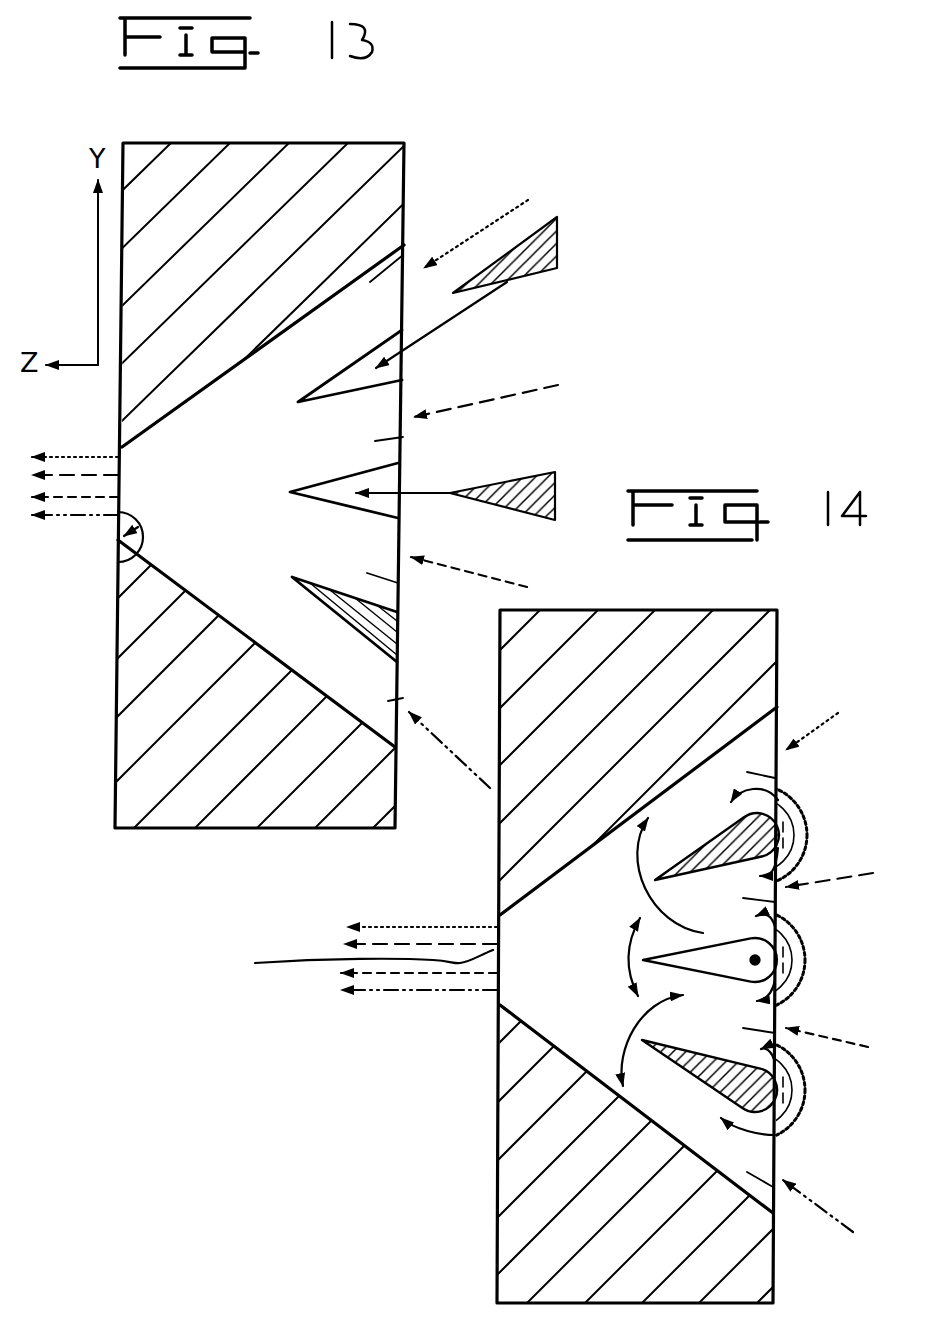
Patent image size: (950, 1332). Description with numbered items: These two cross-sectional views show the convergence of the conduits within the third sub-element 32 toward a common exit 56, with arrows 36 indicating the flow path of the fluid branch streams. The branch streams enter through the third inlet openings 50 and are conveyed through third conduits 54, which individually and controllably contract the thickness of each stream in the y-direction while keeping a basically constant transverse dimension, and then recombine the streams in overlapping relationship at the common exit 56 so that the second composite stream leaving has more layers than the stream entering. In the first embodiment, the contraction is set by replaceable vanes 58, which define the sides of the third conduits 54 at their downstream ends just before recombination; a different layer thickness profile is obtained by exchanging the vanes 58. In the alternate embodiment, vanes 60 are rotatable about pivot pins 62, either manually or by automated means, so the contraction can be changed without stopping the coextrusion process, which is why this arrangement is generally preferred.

In FIG. 13, the third sub-element 32 is at (84, 793).
In FIG. 14, the third sub-element 32 is at (791, 608).
In FIG. 13, the arrows 36 is at (515, 205).
In FIG. 14, the arrows 36 is at (810, 737).
In FIG. 13, the third inlet openings 50 is at (403, 303).
In FIG. 14, the third inlet openings 50 is at (777, 727).
In FIG. 13, the third conduits 54 is at (403, 255).
In FIG. 14, the third conduits 54 is at (775, 778).
In FIG. 13, the common exit 56 is at (117, 562).
In FIG. 14, the common exit 56 is at (352, 962).
In FIG. 13, the replaceable vanes 58 is at (557, 248).
In FIG. 14, the rotatable vanes 60 is at (725, 835).
In FIG. 14, the pivot pins 62 is at (750, 965).